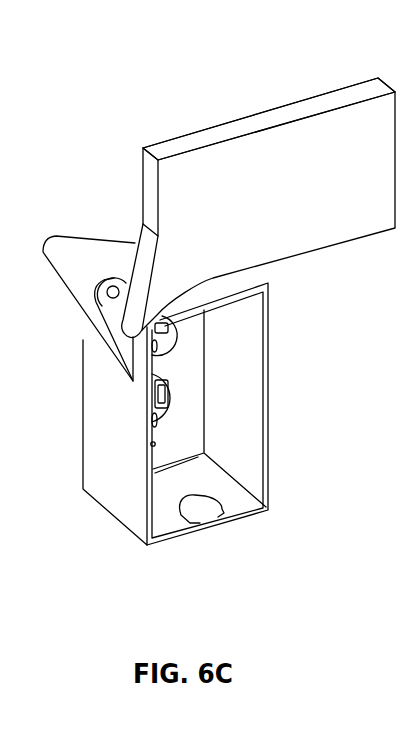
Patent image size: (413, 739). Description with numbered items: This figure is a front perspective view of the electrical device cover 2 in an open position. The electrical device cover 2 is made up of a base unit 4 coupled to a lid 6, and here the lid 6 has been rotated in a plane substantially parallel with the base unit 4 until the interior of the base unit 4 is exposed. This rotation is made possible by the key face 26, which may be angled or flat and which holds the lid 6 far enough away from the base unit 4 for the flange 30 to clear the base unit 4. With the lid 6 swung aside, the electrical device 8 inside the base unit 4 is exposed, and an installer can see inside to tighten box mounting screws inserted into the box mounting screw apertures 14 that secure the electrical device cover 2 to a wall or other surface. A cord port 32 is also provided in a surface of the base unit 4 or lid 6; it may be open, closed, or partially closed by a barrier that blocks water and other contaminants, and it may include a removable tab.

The electrical device cover 2 is at (130, 196).
The base unit 4 is at (118, 470).
The lid 6 is at (280, 172).
The electrical device 8 is at (178, 393).
The box mounting screw apertures 14 is at (156, 445).
The key face 26 is at (115, 282).
The flange 30 is at (178, 145).
The cord port 32 is at (205, 508).